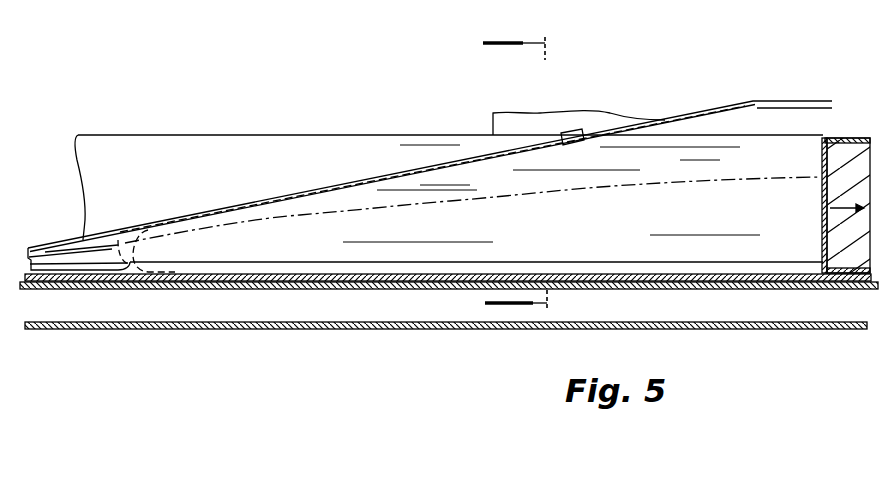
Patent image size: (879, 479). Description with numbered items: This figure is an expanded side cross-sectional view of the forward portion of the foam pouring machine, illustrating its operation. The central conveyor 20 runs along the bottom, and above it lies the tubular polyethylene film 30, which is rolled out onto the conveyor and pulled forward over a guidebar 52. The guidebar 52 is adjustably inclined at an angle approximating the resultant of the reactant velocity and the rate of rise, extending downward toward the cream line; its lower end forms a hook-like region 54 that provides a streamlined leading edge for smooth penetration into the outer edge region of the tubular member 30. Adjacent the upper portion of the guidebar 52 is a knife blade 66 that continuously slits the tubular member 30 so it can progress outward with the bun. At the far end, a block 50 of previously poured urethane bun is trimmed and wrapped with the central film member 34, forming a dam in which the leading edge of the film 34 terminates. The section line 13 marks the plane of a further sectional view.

The section line 13- 13 is at (532, 175).
The central conveyor 20 is at (357, 289).
The tubular polyethylene film 30 is at (848, 294).
The central film member 34 is at (823, 165).
The block 50 is at (845, 148).
The guidebar 52 is at (287, 190).
The hook-like region 54 is at (118, 240).
The knife blade 66 is at (560, 134).